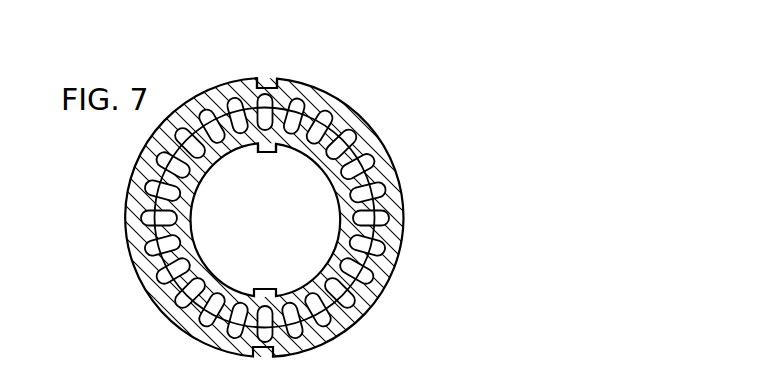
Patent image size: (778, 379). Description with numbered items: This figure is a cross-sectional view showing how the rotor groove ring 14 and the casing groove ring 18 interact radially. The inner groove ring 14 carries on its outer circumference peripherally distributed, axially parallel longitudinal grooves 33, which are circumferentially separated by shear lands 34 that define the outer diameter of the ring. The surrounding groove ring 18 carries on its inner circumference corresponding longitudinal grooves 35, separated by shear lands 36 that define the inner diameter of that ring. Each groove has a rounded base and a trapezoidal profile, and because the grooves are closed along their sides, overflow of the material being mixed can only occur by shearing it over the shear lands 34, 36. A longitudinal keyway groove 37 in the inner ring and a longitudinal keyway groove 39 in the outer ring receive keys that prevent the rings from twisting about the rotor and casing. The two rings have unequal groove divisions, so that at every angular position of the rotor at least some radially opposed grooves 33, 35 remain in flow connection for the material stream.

The groove ring 18 is at (189, 111).
The longitudinal keyway groove 39 is at (268, 80).
The groove ring 14 is at (304, 119).
The longitudinal keyway groove 37 is at (264, 153).
The longitudinal grooves 35 is at (363, 161).
The shear lands 36 is at (372, 236).
The longitudinal grooves 33 is at (158, 225).
The shear lands 34 is at (148, 255).